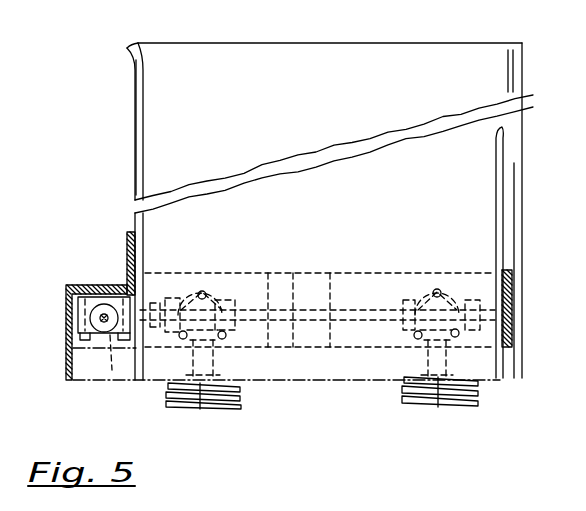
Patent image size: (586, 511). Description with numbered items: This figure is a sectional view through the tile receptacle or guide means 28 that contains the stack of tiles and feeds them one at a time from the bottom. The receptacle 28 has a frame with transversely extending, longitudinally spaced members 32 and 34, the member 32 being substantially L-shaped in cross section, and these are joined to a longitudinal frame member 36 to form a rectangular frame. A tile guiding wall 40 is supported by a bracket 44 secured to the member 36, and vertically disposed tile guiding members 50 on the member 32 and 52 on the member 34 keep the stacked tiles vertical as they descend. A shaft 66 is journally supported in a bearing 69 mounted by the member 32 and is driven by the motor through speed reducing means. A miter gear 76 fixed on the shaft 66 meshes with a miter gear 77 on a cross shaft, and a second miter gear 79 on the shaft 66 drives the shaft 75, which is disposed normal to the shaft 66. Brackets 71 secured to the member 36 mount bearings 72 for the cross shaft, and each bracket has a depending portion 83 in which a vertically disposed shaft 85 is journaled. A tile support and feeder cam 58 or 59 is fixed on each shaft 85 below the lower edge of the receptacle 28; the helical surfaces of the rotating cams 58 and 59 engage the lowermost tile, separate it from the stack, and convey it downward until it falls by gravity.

The receptacle or guide means 28 is at (360, 33).
The tile guiding wall 40 is at (324, 88).
The tile guiding member 50 is at (143, 68).
The second miter gear 79 is at (584, 75).
The tile guiding member 52 is at (495, 152).
The frame member 32 is at (124, 232).
The frame member 34 is at (514, 290).
The bearing 69 is at (78, 313).
The miter gear 76 is at (94, 345).
The shaft 66 is at (105, 314).
The miter gear 77 is at (118, 372).
The frame member 36 is at (262, 274).
The bracket 44 is at (322, 268).
The shaft 75 is at (286, 310).
The bearing 72 is at (178, 292).
The bracket 71 is at (213, 295).
The depending portion 83 is at (222, 360).
The rotatable cam 58 is at (225, 410).
The rotatable cam 59 is at (404, 392).
The vertically disposed shaft 85 is at (200, 412).